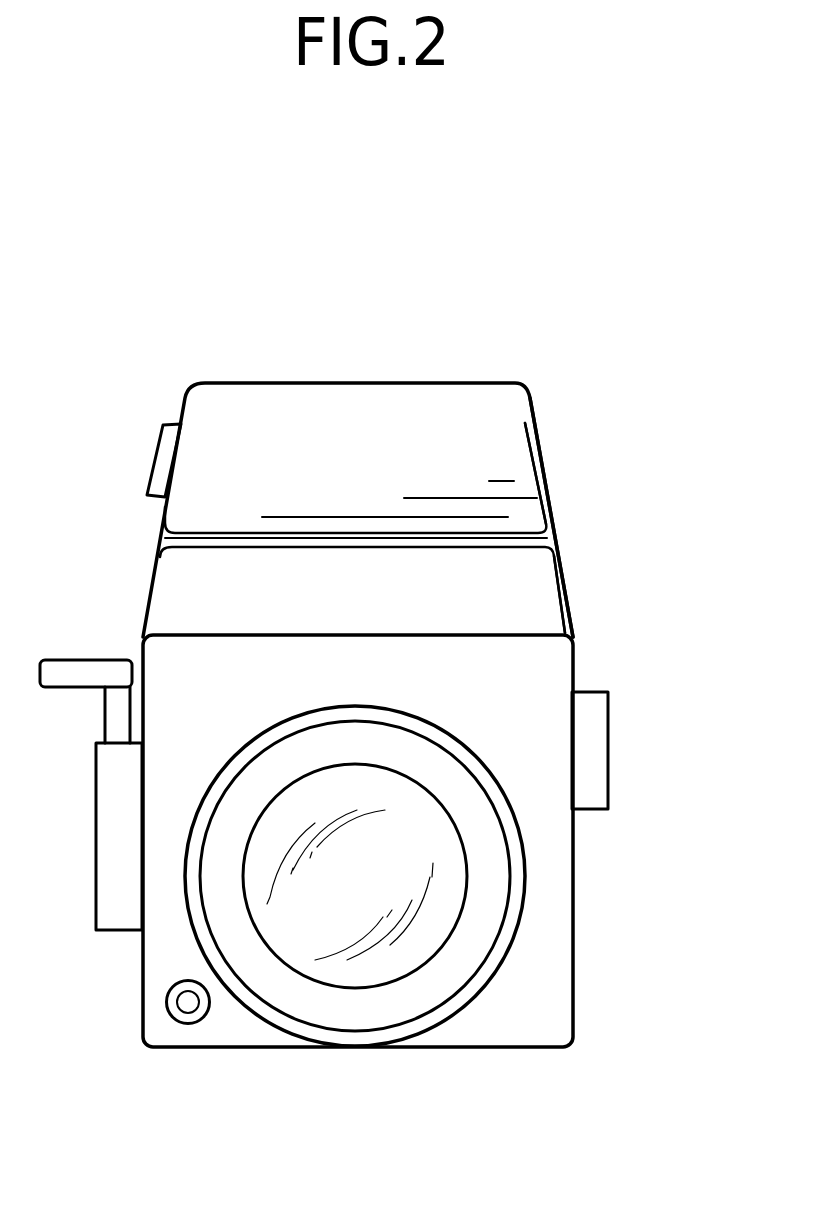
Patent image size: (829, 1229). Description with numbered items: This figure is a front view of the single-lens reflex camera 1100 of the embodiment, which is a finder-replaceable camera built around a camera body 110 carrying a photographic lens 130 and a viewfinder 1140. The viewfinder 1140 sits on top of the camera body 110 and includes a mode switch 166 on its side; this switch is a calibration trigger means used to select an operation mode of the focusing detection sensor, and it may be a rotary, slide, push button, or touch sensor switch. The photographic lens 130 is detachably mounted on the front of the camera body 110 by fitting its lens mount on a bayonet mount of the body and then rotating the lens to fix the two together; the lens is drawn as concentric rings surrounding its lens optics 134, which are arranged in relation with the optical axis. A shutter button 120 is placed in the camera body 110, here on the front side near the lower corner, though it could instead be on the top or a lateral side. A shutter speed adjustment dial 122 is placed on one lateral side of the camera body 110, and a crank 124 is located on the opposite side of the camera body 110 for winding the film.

The single-lens reflex camera 1100 is at (497, 315).
The viewfinder 1140 is at (552, 503).
The mode switch 166 is at (152, 460).
The crank 124 is at (77, 660).
The camera body 110 is at (573, 923).
The shutter speed adjustment dial 122 is at (605, 748).
The shutter button 120 is at (182, 1005).
The photographic lens 130 is at (482, 993).
The lens optics 134 is at (377, 967).